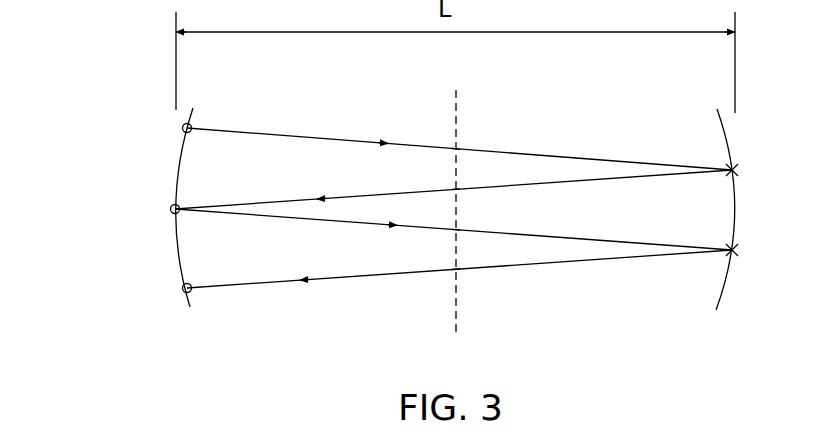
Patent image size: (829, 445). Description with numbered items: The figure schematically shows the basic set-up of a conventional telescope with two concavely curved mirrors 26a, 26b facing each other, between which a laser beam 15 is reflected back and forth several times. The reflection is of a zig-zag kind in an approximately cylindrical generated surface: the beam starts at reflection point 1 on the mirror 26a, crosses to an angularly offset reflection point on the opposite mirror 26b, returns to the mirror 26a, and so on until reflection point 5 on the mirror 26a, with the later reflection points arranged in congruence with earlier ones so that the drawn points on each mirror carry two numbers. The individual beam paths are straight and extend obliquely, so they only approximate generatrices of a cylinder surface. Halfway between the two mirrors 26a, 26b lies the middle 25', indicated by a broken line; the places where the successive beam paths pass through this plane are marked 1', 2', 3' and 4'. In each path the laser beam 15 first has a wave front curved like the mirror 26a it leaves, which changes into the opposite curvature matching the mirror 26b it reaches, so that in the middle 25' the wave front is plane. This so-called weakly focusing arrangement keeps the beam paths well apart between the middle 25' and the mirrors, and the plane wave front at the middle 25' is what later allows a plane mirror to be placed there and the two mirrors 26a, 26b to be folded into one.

The reflection point 1 is at (164, 129).
The reflection point 5 is at (182, 289).
The laser beam 15 is at (240, 132).
The middle 25' is at (423, 199).
The beam crossing point in central plane 1' is at (479, 123).
The beam crossing point in central plane 2' is at (434, 175).
The beam crossing point in central plane 3' is at (481, 211).
The beam crossing point in central plane 4' is at (434, 255).
The concavely curved mirror 26a is at (193, 307).
The concavely curved mirror 26b is at (727, 283).